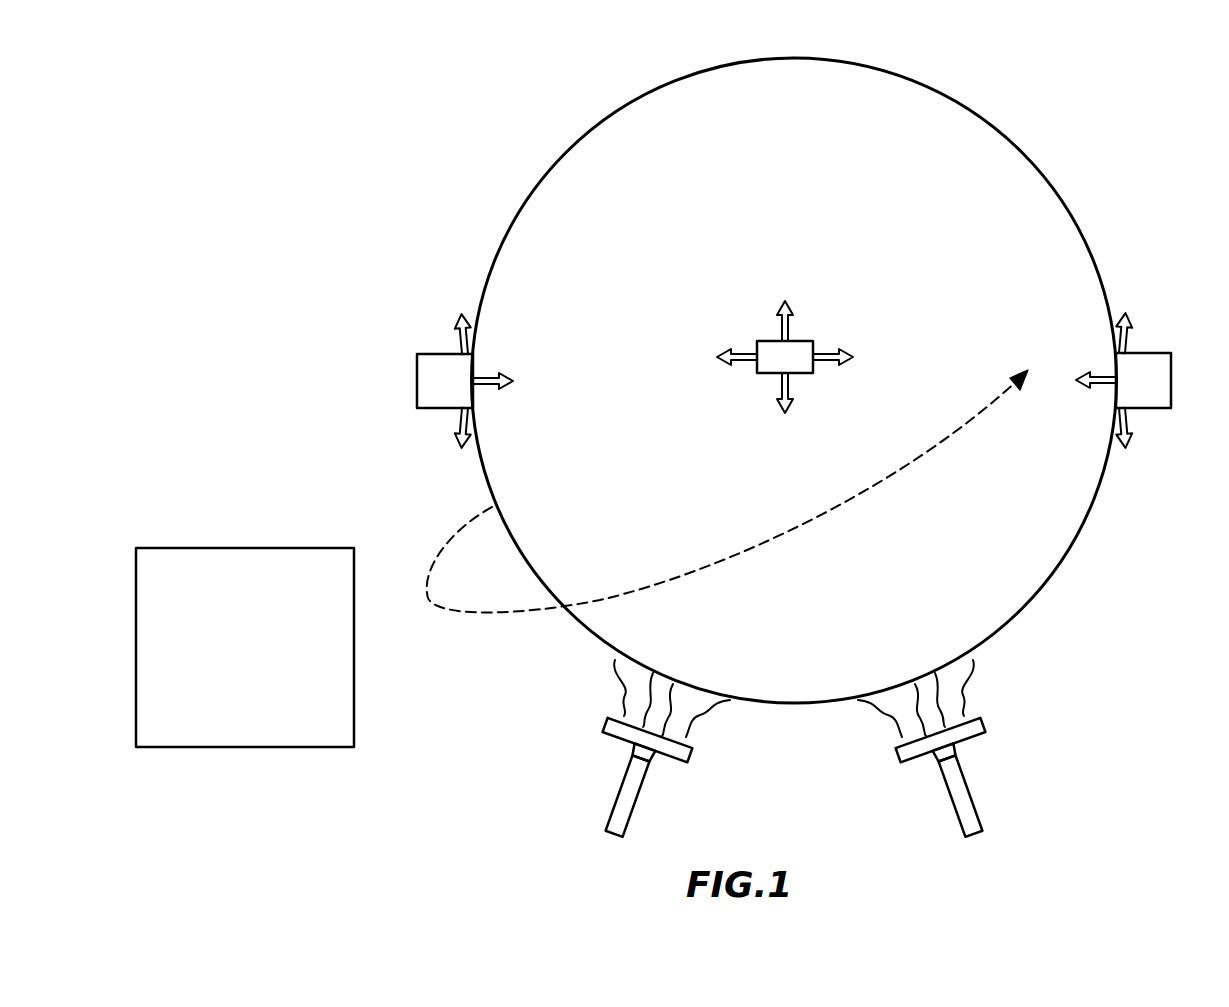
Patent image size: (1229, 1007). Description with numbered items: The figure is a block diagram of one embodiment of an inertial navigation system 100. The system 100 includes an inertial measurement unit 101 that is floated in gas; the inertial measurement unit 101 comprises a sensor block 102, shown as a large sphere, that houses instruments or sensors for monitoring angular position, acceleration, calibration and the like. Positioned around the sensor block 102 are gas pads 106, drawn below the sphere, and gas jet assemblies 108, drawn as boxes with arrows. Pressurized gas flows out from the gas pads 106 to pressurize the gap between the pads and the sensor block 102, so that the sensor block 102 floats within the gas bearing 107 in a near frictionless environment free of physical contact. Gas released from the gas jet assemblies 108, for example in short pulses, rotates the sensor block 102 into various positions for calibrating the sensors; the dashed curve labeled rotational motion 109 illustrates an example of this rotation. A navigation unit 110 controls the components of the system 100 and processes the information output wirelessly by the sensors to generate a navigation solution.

The inertial navigation system 100 is at (323, 152).
The inertial measurement unit 101 is at (794, 364).
The sensor block 102 is at (925, 80).
The gas pad 106 is at (607, 722).
The gas bearing 107 is at (970, 690).
The gas jet assembly 108 is at (462, 335).
The rotational motion 109 is at (812, 538).
The navigation unit 110 is at (282, 547).